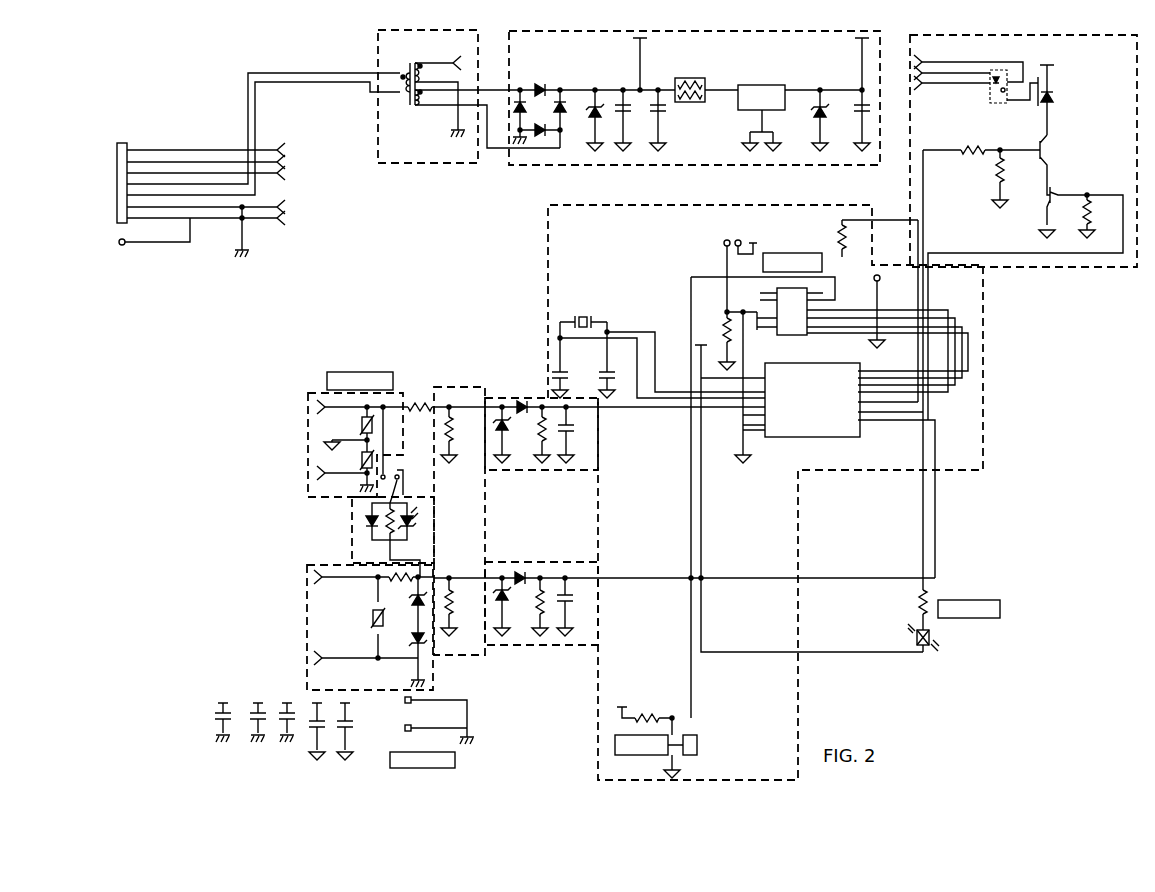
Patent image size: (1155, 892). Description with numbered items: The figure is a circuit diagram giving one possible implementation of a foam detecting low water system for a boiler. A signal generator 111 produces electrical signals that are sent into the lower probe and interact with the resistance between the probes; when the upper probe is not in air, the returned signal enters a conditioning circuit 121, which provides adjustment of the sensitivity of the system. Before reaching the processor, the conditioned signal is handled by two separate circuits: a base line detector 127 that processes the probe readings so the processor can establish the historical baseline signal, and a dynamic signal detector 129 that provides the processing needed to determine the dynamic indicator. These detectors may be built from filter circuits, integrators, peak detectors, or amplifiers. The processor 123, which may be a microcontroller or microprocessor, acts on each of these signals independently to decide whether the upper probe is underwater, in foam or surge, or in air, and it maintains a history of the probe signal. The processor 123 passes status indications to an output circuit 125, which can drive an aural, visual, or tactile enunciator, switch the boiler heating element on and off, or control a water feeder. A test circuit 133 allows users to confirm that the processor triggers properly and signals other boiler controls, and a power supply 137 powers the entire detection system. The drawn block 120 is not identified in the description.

The signal generator 111 is at (425, 168).
The power supply 137 is at (540, 167).
The output circuit 125 is at (1057, 270).
The processor 123 is at (987, 378).
The conditioning circuit 121 is at (450, 383).
The base line detector 127 is at (523, 397).
The sensor input circuit 120 is at (308, 443).
The test circuit 133 is at (350, 537).
The dynamic signal detector 129 is at (547, 647).